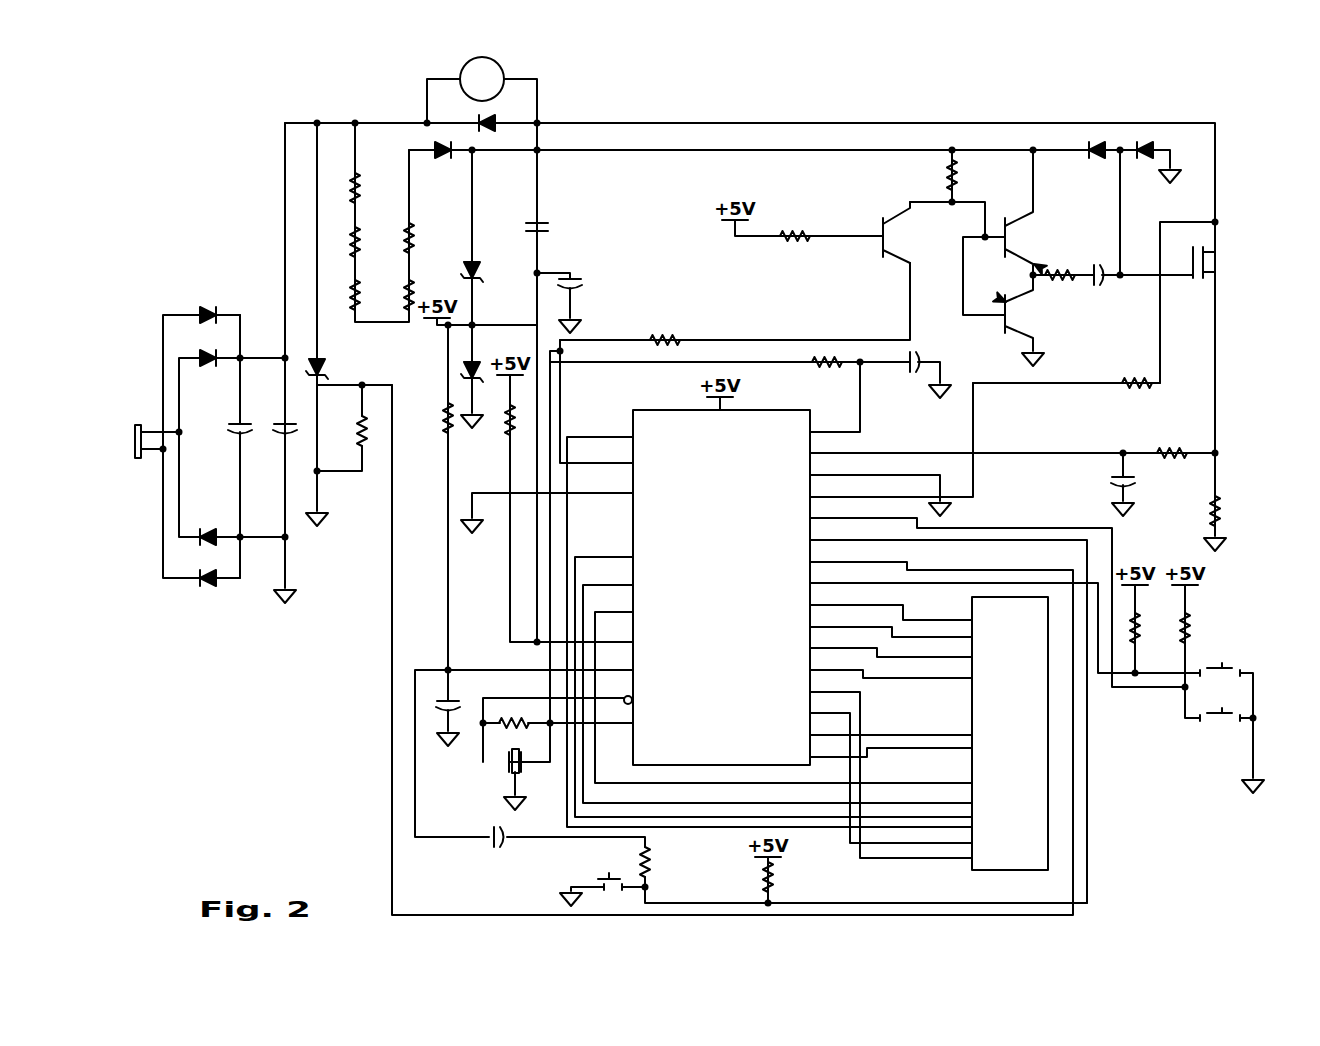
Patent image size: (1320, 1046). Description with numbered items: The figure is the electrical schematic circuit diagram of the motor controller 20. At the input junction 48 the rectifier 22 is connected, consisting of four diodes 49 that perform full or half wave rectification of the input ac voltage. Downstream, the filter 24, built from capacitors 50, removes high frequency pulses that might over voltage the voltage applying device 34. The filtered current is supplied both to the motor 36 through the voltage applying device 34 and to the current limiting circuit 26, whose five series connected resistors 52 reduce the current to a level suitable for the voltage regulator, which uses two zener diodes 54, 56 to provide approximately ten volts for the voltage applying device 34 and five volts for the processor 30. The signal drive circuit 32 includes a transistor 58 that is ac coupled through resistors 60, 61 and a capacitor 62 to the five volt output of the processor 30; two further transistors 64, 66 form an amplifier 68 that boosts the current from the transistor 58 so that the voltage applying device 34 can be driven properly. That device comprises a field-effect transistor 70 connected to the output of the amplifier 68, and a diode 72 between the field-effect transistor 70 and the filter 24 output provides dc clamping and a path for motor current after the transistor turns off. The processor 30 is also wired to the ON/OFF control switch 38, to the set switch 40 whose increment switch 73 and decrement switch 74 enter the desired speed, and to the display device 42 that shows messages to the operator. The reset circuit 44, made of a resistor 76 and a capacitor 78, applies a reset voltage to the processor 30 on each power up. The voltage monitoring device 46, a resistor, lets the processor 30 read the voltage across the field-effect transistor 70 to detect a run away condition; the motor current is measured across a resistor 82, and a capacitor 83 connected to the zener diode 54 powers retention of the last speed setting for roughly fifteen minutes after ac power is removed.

The motor controller 20 is at (1015, 96).
The rectifier 22 is at (226, 440).
The filter 24 is at (295, 452).
The current limiting circuit 26 is at (398, 251).
The processor 30 is at (708, 565).
The signal drive circuit 32 is at (872, 138).
The voltage applying device 34 is at (1232, 262).
The motor 36 is at (504, 79).
The ON/OFF control switch 38 is at (608, 876).
The set switch 40 is at (1213, 678).
The display device 42 is at (1012, 870).
The reset circuit 44 is at (428, 681).
The voltage monitoring device 46 is at (345, 372).
The input junction 48 is at (140, 424).
The diodes 49 is at (210, 307).
The capacitors 50 is at (247, 418).
The resistors 52 is at (360, 177).
The zener diode 54 is at (479, 270).
The zener diode 56 is at (479, 360).
The transistor 58 is at (888, 255).
The resistor 60 is at (666, 332).
The resistor 61 is at (797, 243).
The capacitor 62 is at (1100, 290).
The transistor 64 is at (1030, 218).
The transistor 66 is at (1022, 320).
The amplifier 68 is at (1052, 262).
The field-effect transistor 70 is at (1206, 257).
The diode 72 is at (496, 119).
The increment switch 73 is at (1218, 664).
The decrement switch 74 is at (1218, 724).
The resistor 76 is at (444, 435).
The capacitor 78 is at (452, 715).
The resistor 82 is at (1224, 518).
The capacitor 83 is at (573, 284).